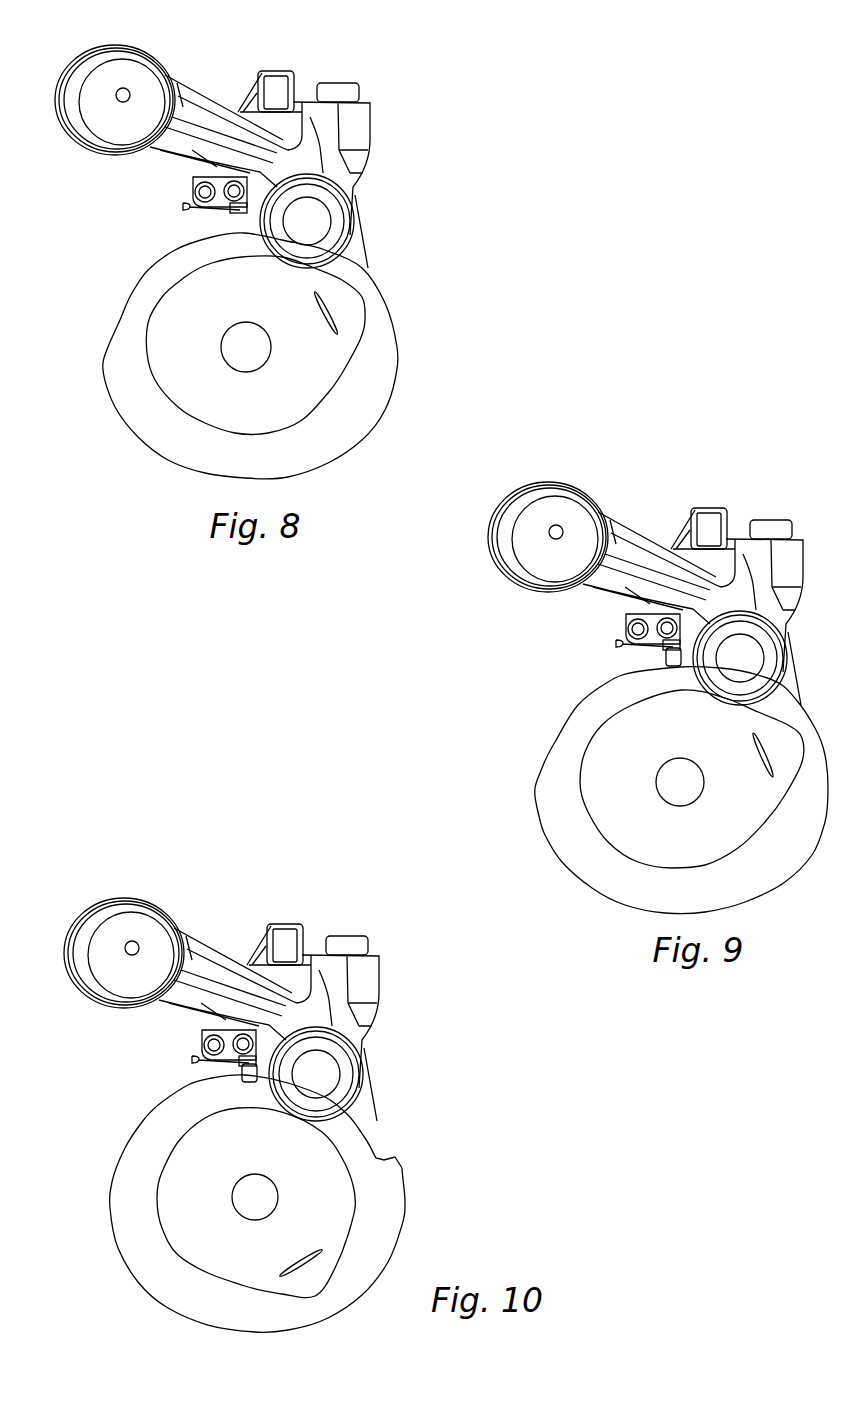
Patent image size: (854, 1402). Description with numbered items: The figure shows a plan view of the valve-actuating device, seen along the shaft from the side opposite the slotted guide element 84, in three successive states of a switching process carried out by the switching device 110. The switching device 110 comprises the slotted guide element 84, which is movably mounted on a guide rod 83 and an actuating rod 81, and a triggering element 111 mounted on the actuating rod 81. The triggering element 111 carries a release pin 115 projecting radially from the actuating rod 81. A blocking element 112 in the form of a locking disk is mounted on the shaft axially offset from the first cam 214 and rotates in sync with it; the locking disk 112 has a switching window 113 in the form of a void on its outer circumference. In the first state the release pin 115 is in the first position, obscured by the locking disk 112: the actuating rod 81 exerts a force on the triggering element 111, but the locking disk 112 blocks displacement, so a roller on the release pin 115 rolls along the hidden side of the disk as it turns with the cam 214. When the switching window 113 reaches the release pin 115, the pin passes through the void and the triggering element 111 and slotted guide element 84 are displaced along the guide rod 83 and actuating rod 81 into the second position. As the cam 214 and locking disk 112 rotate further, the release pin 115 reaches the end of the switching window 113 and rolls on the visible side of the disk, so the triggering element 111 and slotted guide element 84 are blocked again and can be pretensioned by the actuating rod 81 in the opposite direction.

In FIG. 8, the switching device 110 is at (226, 88).
In FIG. 8, the slotted guide element 84 is at (288, 71).
In FIG. 8, the guide rod 83 is at (196, 193).
In FIG. 8, the actuating rod 81 is at (244, 192).
In FIG. 8, the switching window 113 is at (141, 271).
In FIG. 8, the triggering element 111 is at (233, 214).
In FIG. 8, the first cam 214 is at (163, 335).
In FIG. 8, the blocking element (locking disk) 112 is at (375, 372).
In FIG. 9, the release pin 115 is at (668, 660).
In FIG. 10, the release pin 115 is at (241, 1072).